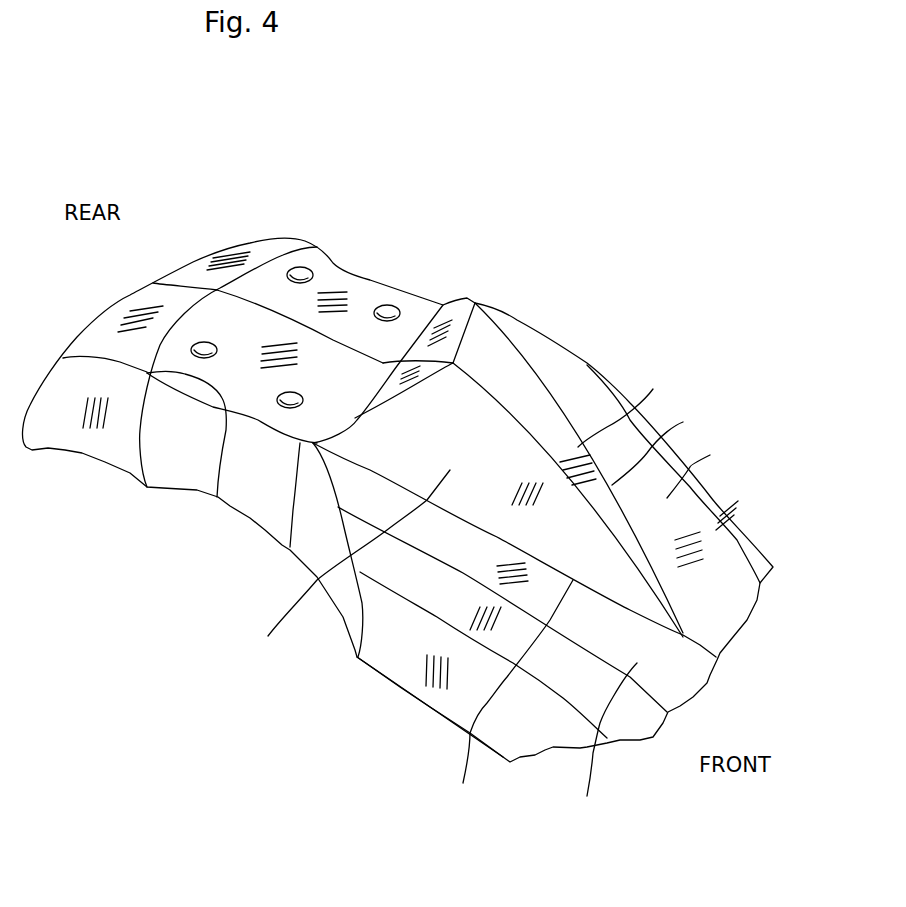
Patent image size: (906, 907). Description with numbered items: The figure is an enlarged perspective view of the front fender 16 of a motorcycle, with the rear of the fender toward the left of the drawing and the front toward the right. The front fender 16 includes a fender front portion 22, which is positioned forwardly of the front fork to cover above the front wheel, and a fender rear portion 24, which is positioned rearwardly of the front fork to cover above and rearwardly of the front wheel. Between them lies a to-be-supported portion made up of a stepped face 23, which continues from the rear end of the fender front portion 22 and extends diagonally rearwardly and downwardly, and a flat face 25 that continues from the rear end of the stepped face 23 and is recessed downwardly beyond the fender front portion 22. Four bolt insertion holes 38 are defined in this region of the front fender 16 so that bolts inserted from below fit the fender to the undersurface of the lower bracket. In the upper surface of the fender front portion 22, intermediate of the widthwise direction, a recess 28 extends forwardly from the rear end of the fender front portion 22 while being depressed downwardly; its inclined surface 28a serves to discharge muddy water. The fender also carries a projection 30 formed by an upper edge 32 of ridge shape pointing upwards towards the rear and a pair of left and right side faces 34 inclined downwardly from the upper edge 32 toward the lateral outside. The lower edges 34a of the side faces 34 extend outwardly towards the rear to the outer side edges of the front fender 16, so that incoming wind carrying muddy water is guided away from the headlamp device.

The front fender 16 is at (603, 361).
The fender front portion 22 is at (400, 687).
The stepped face 23 is at (465, 299).
The fender rear portion 24 is at (192, 266).
The flat face 25 is at (357, 285).
The recess 28 is at (707, 633).
The inclined surface 28a is at (558, 629).
The projection 30 is at (507, 328).
The upper edge 32 is at (507, 407).
The side face 34 is at (482, 515).
The lower edge 34a is at (533, 603).
The bolt insertion hole 38 is at (311, 268).